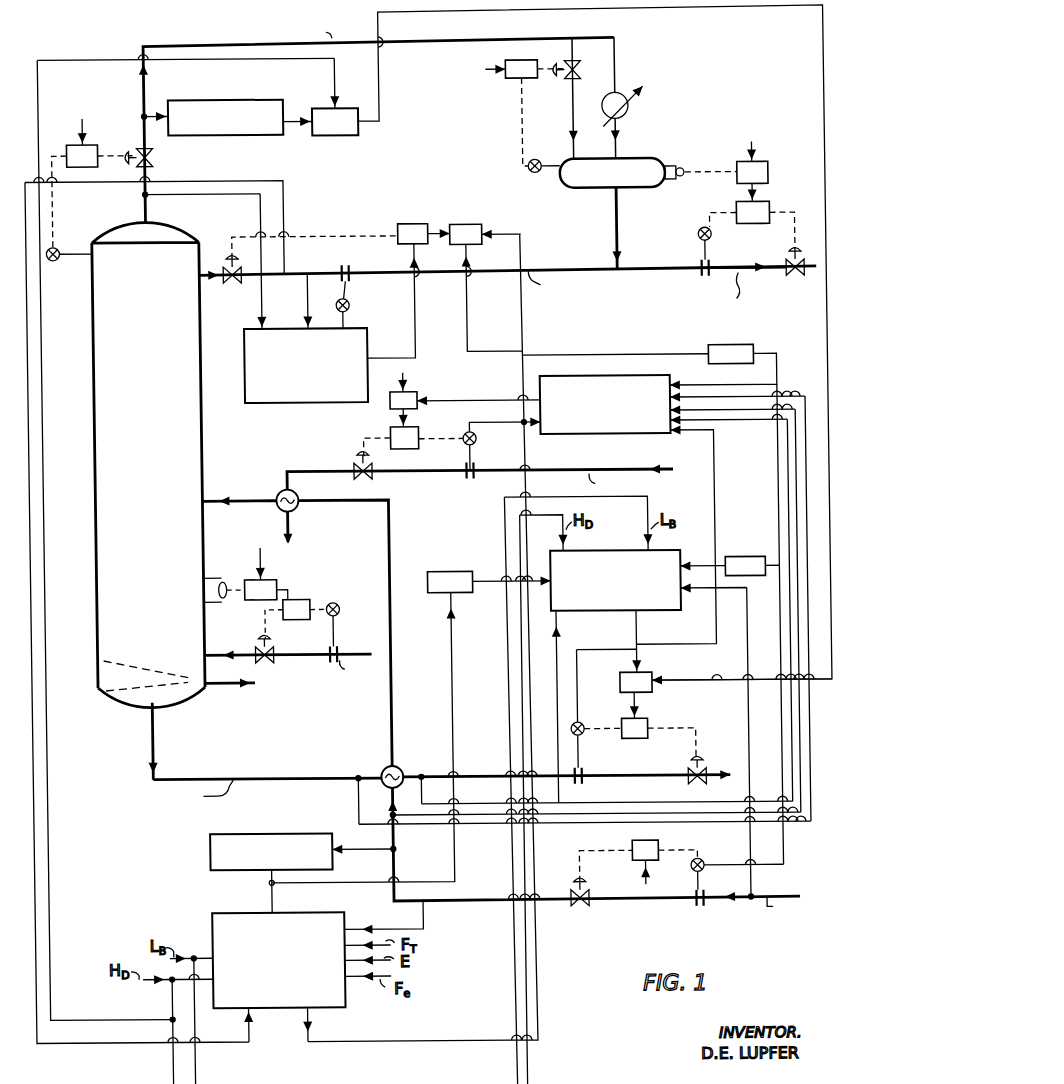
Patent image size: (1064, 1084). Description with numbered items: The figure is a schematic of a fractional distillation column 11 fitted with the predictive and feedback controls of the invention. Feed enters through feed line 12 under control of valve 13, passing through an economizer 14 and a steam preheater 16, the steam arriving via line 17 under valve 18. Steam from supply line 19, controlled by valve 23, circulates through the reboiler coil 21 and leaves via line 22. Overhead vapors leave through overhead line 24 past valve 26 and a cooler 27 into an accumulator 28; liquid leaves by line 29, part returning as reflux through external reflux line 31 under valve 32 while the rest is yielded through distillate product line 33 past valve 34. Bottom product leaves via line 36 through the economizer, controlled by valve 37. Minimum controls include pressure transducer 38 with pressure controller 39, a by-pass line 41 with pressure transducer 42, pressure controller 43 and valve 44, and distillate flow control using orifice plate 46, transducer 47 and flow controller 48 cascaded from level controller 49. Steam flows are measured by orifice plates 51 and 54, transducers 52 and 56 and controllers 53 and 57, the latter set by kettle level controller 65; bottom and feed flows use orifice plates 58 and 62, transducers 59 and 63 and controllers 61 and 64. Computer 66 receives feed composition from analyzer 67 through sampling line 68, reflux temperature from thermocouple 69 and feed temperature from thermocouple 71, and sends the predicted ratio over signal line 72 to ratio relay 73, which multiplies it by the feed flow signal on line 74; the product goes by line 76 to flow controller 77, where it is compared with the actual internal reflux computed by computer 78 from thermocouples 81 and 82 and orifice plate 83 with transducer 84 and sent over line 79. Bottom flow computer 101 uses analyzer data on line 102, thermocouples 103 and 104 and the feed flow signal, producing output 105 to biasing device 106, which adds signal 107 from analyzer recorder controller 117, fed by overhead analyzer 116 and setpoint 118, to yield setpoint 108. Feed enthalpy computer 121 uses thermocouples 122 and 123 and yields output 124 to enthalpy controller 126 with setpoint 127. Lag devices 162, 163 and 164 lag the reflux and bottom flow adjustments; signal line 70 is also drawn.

The fractional distillation column 11 is at (96, 395).
The feed line 12 is at (388, 577).
The feed control valve 13 is at (570, 891).
The economizer 14 is at (385, 764).
The preheater 16 is at (278, 486).
The steam line 17 is at (529, 473).
The steam flow control valve 18 is at (361, 454).
The steam supply line 19 is at (356, 649).
The reboiler coil 21 is at (199, 695).
The heat exchange medium withdrawal line 22 is at (254, 682).
The reboiler steam control valve 23 is at (256, 643).
The overhead line 24 is at (149, 83).
The overhead control valve 26 is at (146, 145).
The cooler 27 is at (633, 115).
The accumulator 28 is at (627, 159).
The accumulator withdrawal line 29 is at (625, 205).
The external reflux line 31 is at (455, 283).
The reflux control valve 32 is at (237, 276).
The distillate product line 33 is at (737, 276).
The distillate control valve 34 is at (791, 262).
The bottom product line 36 is at (148, 768).
The bottom product control valve 37 is at (697, 764).
The pressure transducer 38 is at (56, 258).
The pressure controller 39 is at (76, 142).
The by-pass line 41 is at (571, 100).
The pressure transducer 42 is at (536, 159).
The pressure controller 43 is at (510, 83).
The flow control valve 44 is at (583, 72).
The orifice plate 46 is at (710, 267).
The differential pressure transducer 47 is at (706, 238).
The flow controller 48 is at (774, 204).
The liquid level controller 49 is at (773, 165).
The orifice plate 51 is at (460, 478).
The differential pressure transducer 52 is at (478, 440).
The steam flow controller 53 is at (413, 448).
The orifice plate 54 is at (314, 656).
The differential pressure transducer 56 is at (339, 600).
The flow controller 57 is at (287, 618).
The orifice plate 58 is at (578, 777).
The differential pressure transducer 59 is at (576, 735).
The flow controller 61 is at (639, 737).
The orifice plate 62 is at (699, 886).
The differential pressure transducer 63 is at (679, 866).
The flow controller 64 is at (604, 875).
The liquid level controller 65 is at (276, 582).
The predictive internal reflux computer 66 is at (209, 911).
The analyzer 67 is at (206, 868).
The sampling line 68 is at (375, 854).
The thermocouple 69 is at (270, 261).
The analyzer output signal line 70 is at (266, 900).
The thermocouple 71 is at (418, 906).
The signal line 72 is at (525, 325).
The ratio relay 73 is at (474, 224).
The signal line 74 is at (464, 315).
The signal line 76 is at (440, 233).
The flow controller 77 is at (402, 223).
The actual internal reflux computer 78 is at (249, 402).
The signal line 79 is at (417, 340).
The thermocouple 81 is at (149, 196).
The thermocouple 82 is at (345, 272).
The orifice plate 83 is at (318, 300).
The flow transducer 84 is at (352, 288).
The bottom product flow computer 101 is at (671, 552).
The signal line 102 is at (451, 708).
The thermocouple 103 is at (555, 783).
The thermocouple 104 is at (747, 900).
The output signal 105 is at (639, 657).
The biasing device 106 is at (618, 685).
The signal 107 is at (680, 681).
The output signal 108 is at (635, 707).
The analyzer 116 is at (249, 96).
The analyzer recorder controller 117 is at (364, 134).
The setpoint signal 118 is at (330, 80).
The feed enthalpy computer 121 is at (601, 376).
The thermocouple 122 is at (406, 776).
The thermocouple 123 is at (340, 778).
The output signal 124 is at (436, 402).
The enthalpy controller recorder 126 is at (430, 397).
The setpoint 127 is at (407, 380).
The lag device 162 is at (700, 354).
The lag device 163 is at (725, 558).
The lag unit 164 is at (429, 571).